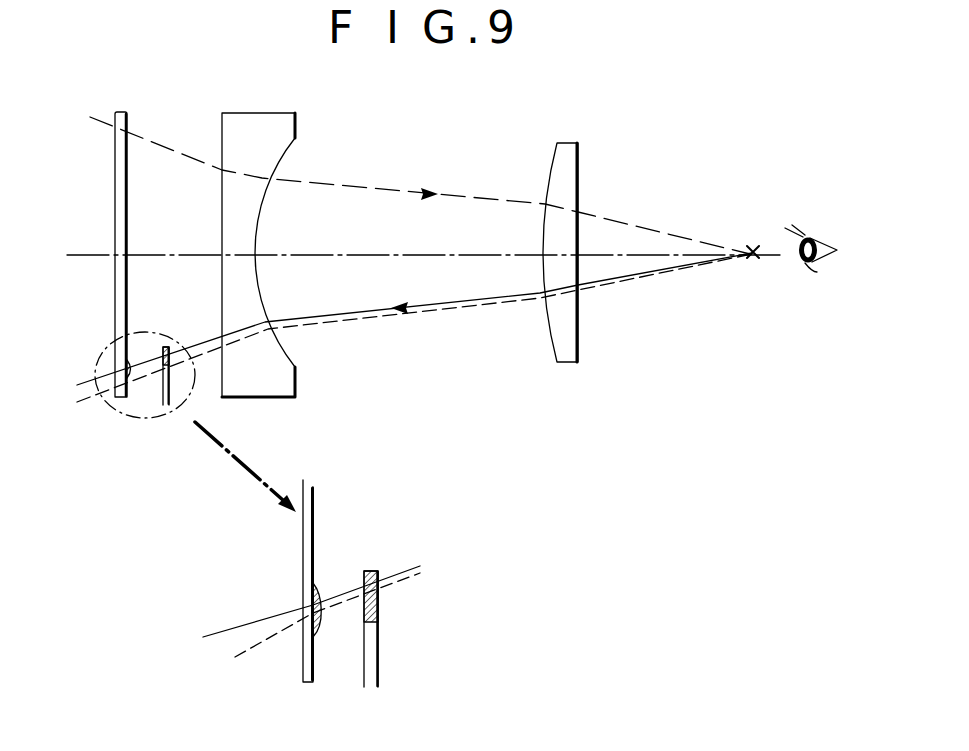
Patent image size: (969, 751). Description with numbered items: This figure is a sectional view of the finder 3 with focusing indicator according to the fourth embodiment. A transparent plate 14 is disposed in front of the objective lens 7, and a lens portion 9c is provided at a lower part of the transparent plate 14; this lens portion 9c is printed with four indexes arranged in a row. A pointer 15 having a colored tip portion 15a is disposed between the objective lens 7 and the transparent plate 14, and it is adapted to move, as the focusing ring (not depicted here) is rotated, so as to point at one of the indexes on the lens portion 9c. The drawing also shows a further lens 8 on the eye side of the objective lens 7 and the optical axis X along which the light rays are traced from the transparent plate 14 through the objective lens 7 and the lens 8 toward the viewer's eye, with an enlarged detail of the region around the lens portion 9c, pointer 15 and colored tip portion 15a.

The finder 3 is at (436, 131).
The objective lens 7 is at (247, 113).
The convex eyepiece lens 8 is at (572, 143).
The transparent plate 14 is at (118, 332).
The pointer 15 is at (166, 347).
The colored tip portion 15a is at (380, 600).
The lens portion 9c is at (320, 583).
The optical axis X is at (100, 258).